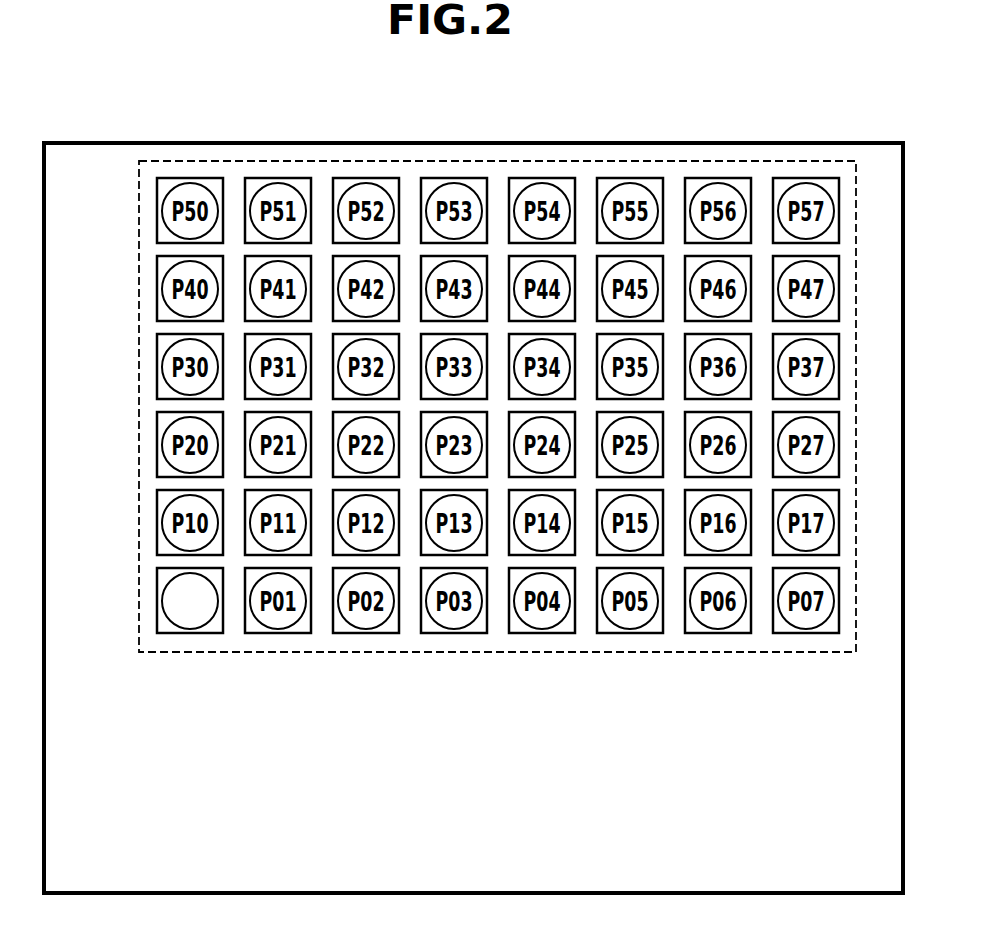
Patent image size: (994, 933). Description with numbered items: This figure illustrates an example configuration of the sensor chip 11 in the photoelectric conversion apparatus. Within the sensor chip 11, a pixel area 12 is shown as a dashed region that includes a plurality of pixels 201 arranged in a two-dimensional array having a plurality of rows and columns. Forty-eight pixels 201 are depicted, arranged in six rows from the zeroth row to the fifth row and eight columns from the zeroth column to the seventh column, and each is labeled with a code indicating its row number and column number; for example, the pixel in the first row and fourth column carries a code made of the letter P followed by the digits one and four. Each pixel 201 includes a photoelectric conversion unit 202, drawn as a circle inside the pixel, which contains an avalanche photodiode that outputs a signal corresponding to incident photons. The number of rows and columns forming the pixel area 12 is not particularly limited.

The sensor chip 11 is at (799, 143).
The pixel area 12 is at (395, 161).
The pixel 201 is at (157, 625).
The photoelectric conversion unit 202 is at (188, 622).